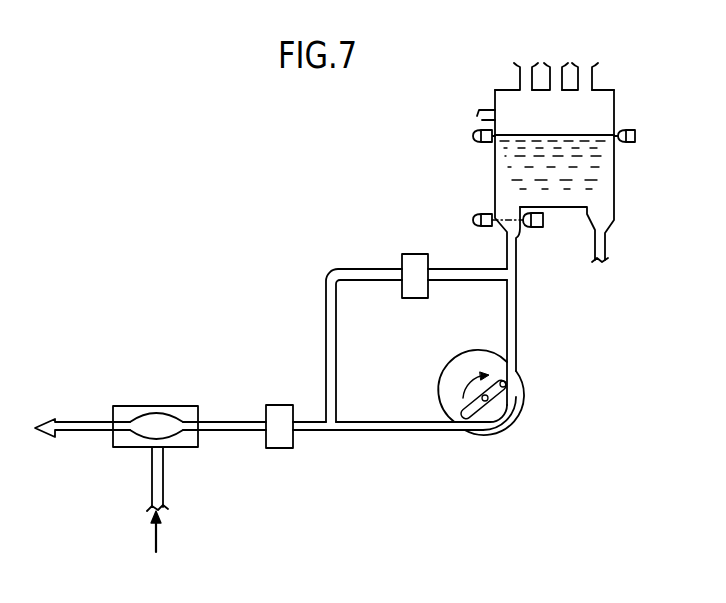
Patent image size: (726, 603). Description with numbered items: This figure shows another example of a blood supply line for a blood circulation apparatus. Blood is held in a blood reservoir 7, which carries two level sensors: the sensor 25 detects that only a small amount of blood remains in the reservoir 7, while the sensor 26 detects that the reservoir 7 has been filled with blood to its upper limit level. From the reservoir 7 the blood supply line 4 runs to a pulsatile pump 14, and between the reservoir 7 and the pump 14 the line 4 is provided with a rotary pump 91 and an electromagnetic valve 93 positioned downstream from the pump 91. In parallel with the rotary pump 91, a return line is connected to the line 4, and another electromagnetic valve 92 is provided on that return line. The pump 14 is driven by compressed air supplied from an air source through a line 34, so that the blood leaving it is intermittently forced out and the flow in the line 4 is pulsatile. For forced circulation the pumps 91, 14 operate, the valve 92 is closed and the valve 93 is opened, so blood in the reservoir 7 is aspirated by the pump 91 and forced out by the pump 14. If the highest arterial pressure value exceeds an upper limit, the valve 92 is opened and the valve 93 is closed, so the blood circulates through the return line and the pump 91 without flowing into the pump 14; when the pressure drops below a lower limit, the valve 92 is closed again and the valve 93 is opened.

The blood reservoir 7 is at (615, 182).
The sensor 26 is at (472, 137).
The sensor 25 is at (478, 213).
The electromagnetic valve 92 is at (413, 254).
The electromagnetic valve 93 is at (281, 405).
The pulsatile pump 14 is at (168, 405).
The line 34 is at (163, 487).
The blood supply line 4 is at (360, 432).
The rotary pump 91 is at (526, 387).